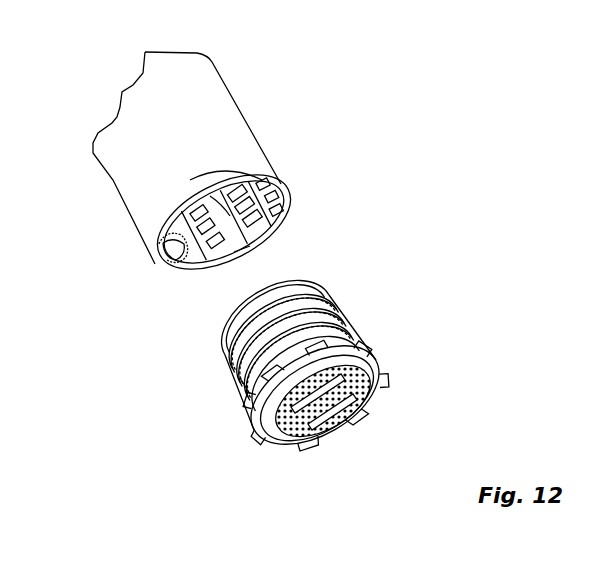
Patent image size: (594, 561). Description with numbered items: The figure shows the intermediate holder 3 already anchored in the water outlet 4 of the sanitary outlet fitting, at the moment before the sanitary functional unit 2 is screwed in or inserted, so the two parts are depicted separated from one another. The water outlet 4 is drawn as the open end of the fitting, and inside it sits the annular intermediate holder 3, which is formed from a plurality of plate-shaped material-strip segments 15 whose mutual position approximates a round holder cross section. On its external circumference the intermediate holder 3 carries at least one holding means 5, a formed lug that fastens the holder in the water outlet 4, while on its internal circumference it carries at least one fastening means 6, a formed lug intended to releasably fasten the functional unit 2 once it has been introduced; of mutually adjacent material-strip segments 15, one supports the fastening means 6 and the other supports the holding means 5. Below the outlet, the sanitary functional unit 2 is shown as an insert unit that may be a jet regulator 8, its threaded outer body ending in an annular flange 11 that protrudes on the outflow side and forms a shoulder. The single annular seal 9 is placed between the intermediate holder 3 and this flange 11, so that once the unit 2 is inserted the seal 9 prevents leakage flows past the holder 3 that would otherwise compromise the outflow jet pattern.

The sanitary functional unit 2 is at (354, 318).
The intermediate holder 3 is at (242, 183).
The water outlet 4 is at (229, 161).
The holding means 5 is at (230, 254).
The fastening means 6 is at (172, 266).
The jet regulator 8 is at (372, 402).
The annular seal 9 is at (250, 385).
The annular flange 11 is at (350, 338).
The material-strip segment 15 is at (210, 198).